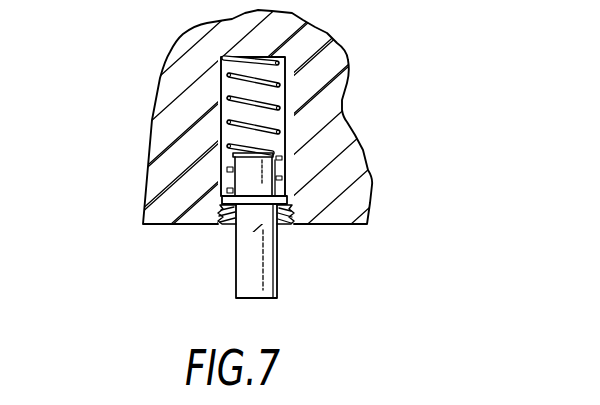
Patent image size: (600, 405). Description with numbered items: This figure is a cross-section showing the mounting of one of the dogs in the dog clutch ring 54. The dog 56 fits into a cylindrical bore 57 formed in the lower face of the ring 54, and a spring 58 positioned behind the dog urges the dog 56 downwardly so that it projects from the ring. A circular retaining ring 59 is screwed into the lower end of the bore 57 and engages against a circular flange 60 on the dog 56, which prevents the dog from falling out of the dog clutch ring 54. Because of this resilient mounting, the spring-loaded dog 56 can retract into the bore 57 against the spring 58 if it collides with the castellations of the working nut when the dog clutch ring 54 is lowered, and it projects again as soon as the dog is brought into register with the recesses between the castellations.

The dog clutch ring 54 is at (322, 140).
The dog 56 is at (250, 248).
The cylindrical bore 57 is at (282, 175).
The spring 58 is at (285, 100).
The circular retaining ring 59 is at (285, 226).
The circular flange 60 is at (287, 196).